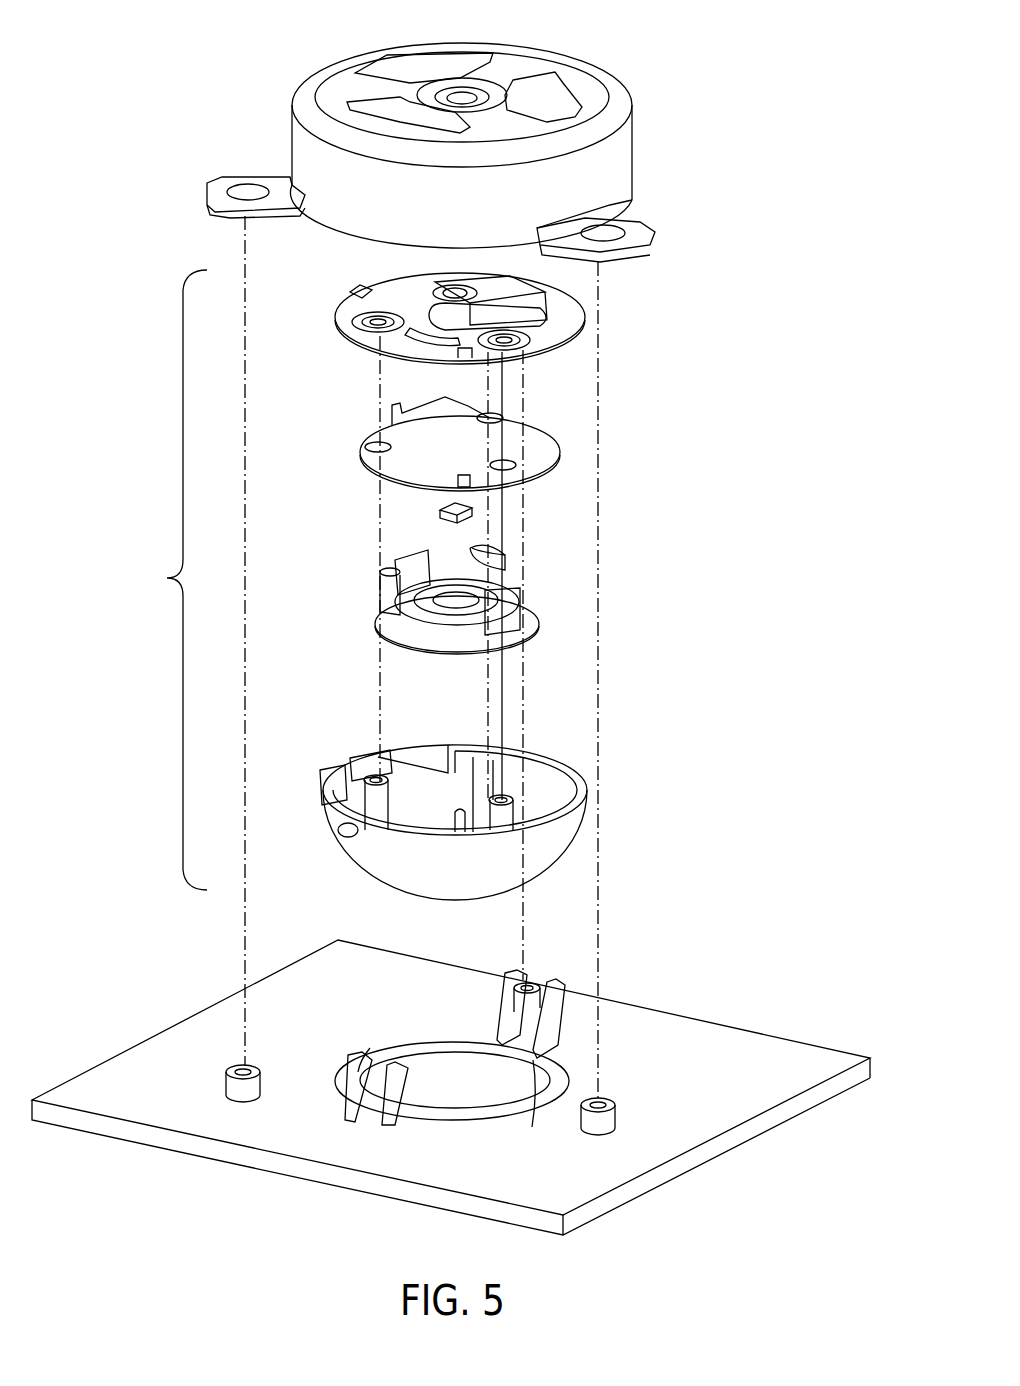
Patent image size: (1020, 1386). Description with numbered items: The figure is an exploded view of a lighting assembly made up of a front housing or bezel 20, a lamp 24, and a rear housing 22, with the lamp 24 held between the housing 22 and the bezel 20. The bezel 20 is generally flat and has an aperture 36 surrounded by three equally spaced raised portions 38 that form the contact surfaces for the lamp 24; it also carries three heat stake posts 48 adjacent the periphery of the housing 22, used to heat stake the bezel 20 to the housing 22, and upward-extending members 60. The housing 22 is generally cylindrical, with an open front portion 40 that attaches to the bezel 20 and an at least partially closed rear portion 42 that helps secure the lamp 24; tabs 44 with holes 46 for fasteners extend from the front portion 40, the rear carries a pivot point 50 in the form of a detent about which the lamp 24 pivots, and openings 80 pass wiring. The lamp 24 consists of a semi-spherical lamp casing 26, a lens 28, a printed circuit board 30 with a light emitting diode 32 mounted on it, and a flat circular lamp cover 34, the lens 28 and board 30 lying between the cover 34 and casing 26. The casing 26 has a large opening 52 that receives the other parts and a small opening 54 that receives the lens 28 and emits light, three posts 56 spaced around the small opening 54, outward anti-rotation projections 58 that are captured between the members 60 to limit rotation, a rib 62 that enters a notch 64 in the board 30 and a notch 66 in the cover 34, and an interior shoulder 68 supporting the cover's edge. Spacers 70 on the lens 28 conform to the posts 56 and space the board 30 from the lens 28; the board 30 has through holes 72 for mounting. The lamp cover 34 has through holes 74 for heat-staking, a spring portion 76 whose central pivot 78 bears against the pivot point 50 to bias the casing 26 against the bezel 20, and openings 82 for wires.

The bezel 20 is at (451, 1079).
The housing 22 is at (442, 138).
The lamp 24 is at (167, 578).
The lamp casing 26 is at (514, 826).
The lens 28 is at (497, 597).
The printed circuit board 30 is at (510, 442).
The light emitting diode 32 is at (440, 510).
The lamp cover 34 is at (520, 322).
The aperture 36 is at (478, 1095).
The raised portions 38 is at (370, 1048).
The front portion 40 is at (330, 225).
The rear portion 42 is at (527, 55).
The tabs 44 is at (434, 190).
The holes 46 is at (248, 185).
The heat stake posts 48 is at (228, 1082).
The pivot point 50 is at (462, 95).
The large opening 52 is at (420, 808).
The small opening 54 is at (465, 905).
The posts 56 is at (372, 790).
The anti-rotation projections 58 is at (345, 833).
The members 60 is at (500, 1020).
The rib 62 is at (452, 824).
The notch 64 is at (460, 475).
The notch 66 is at (466, 355).
The shoulder 68 is at (582, 790).
The spacers 70 is at (380, 580).
The through holes 72 is at (490, 415).
The through holes 74 is at (368, 323).
The spring portion 76 is at (495, 285).
The pivot 78 is at (458, 290).
The openings 80 is at (390, 110).
The openings 82 is at (420, 297).